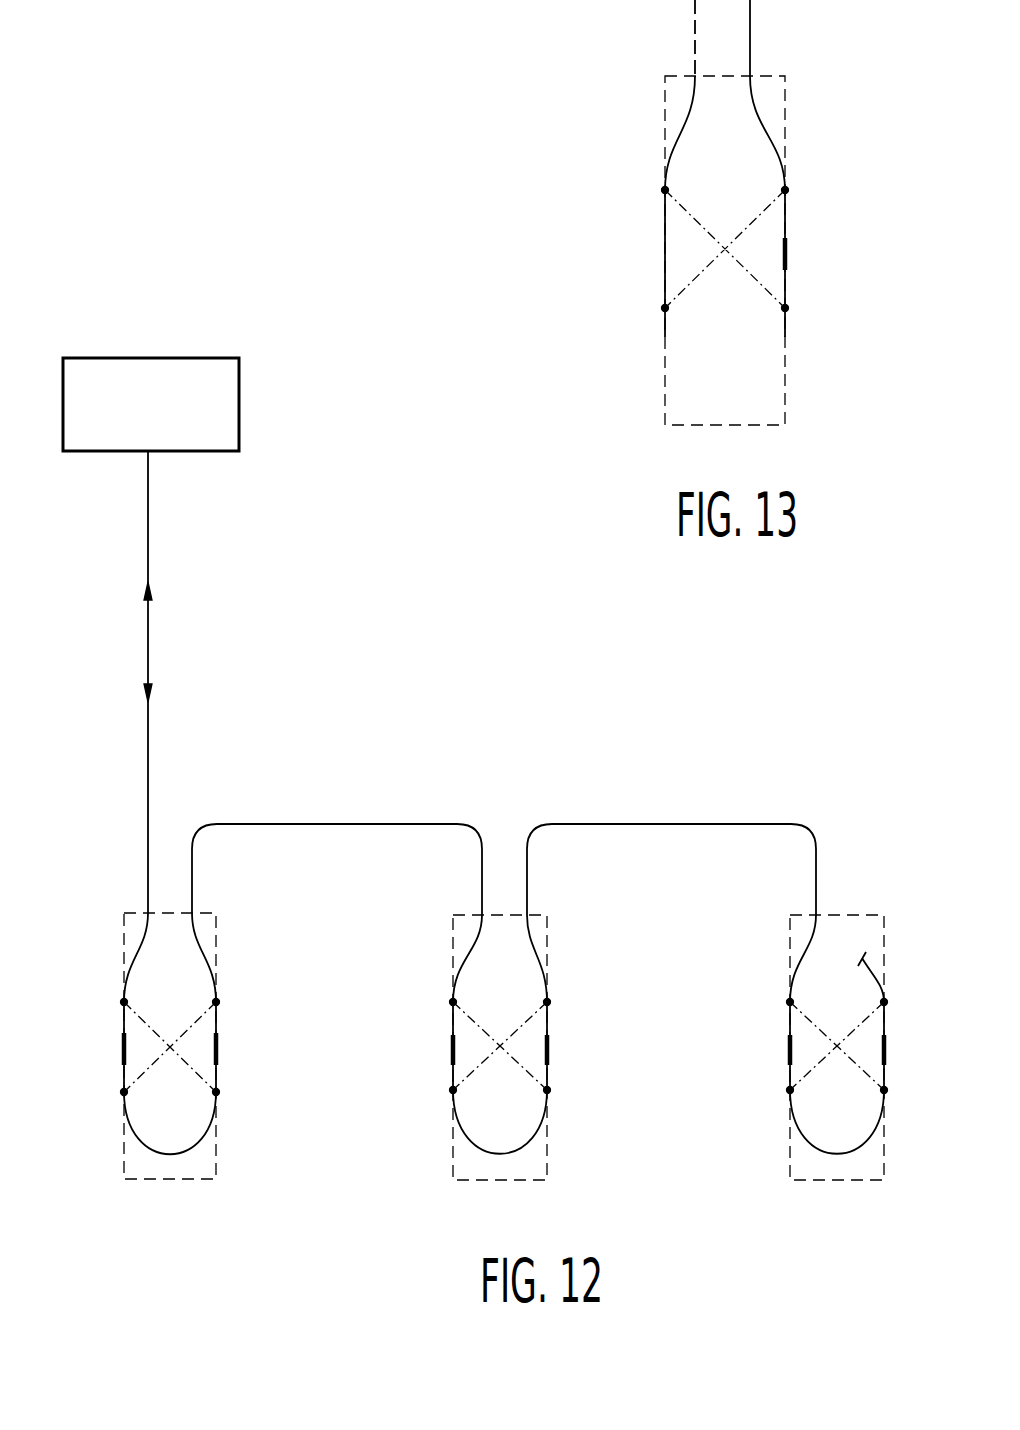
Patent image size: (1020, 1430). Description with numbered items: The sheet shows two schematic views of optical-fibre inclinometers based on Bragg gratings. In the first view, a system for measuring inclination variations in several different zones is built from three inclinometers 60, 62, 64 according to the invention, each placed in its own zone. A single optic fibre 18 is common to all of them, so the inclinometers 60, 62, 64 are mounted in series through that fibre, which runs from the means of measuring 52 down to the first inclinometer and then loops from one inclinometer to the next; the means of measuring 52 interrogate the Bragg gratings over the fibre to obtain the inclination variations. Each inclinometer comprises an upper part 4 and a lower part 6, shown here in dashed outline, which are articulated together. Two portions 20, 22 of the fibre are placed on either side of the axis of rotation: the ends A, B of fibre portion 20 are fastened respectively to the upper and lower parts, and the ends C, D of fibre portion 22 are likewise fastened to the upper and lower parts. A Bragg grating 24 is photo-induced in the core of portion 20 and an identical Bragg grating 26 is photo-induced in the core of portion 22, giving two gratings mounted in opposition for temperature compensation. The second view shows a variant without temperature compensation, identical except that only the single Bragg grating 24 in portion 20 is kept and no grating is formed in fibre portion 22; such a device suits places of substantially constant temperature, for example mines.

In FIG. 13, the upper part 4 is at (681, 186).
In FIG. 12, the upper part 4 is at (218, 925).
In FIG. 13, the lower part 6 is at (662, 387).
In FIG. 12, the lower part 6 is at (218, 1157).
In FIG. 13, the optic fibre 18 is at (752, 42).
In FIG. 12, the optic fibre 18 is at (148, 533).
In FIG. 13, the portion of fibre 20 is at (787, 220).
In FIG. 12, the portion of fibre 20 is at (218, 1022).
In FIG. 13, the portion of fibre 22 is at (665, 240).
In FIG. 12, the portion of fibre 22 is at (124, 1022).
In FIG. 13, the Bragg grating 24 is at (787, 258).
In FIG. 12, the Bragg grating 24 is at (218, 1048).
In FIG. 12, the Bragg grating 26 is at (124, 1048).
In FIG. 12, the means of measuring 52 is at (198, 365).
In FIG. 12, the inclinometer 60 is at (167, 1044).
In FIG. 12, the inclinometer 62 is at (445, 911).
In FIG. 12, the inclinometer 64 is at (792, 909).
In FIG. 13, the end of fibre portion 20 A is at (785, 190).
In FIG. 12, the end of fibre portion 20 A is at (216, 1002).
In FIG. 13, the end of fibre portion 20 B is at (785, 308).
In FIG. 12, the end of fibre portion 20 B is at (216, 1092).
In FIG. 13, the end of fibre portion 22 C is at (665, 190).
In FIG. 12, the end of fibre portion 22 C is at (124, 1002).
In FIG. 13, the end of fibre portion 22 D is at (665, 308).
In FIG. 12, the end of fibre portion 22 D is at (124, 1092).